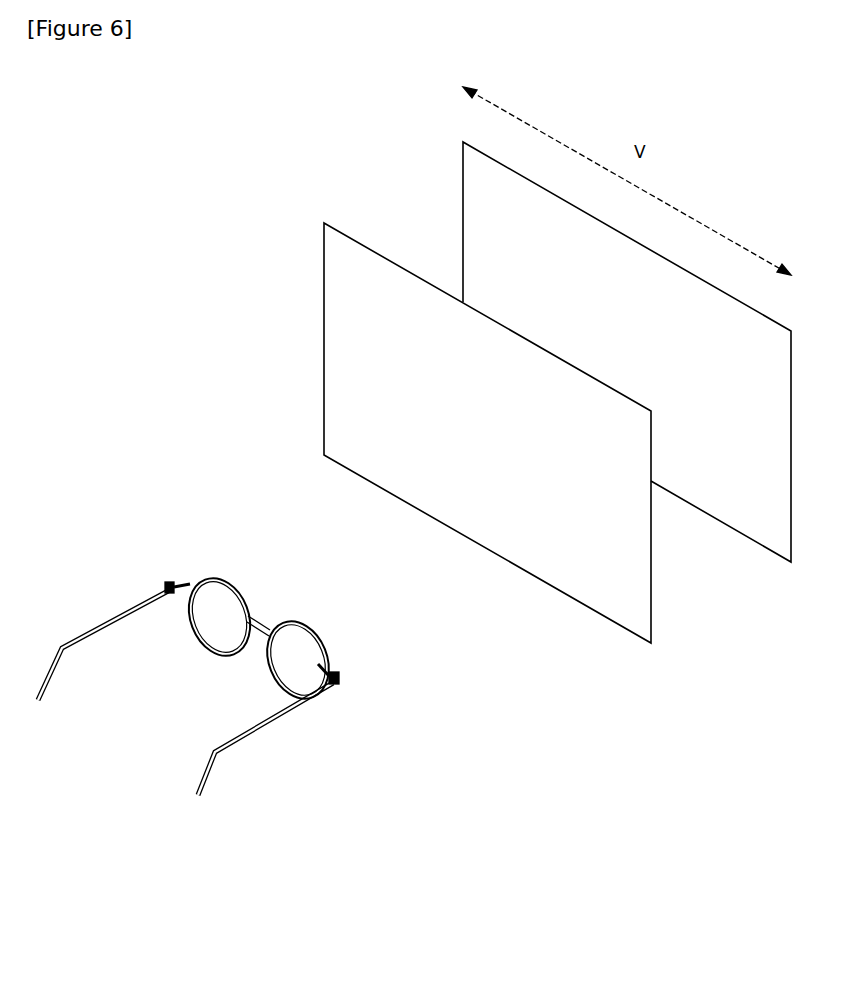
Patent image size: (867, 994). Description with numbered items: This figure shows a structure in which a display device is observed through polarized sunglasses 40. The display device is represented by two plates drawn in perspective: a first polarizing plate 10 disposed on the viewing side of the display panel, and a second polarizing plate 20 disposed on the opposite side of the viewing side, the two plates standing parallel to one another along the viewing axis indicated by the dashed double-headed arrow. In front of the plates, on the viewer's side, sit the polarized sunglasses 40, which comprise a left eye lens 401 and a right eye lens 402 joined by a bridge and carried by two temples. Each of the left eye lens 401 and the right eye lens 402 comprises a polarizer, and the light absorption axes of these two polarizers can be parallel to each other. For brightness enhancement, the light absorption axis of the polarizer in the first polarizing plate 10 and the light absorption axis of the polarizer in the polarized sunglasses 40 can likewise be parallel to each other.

The first polarizing plate 10 is at (358, 355).
The second polarizing plate 20 is at (488, 225).
The polarized sunglasses 40 is at (201, 649).
The left eye lens 401 is at (219, 615).
The right eye lens 402 is at (301, 666).